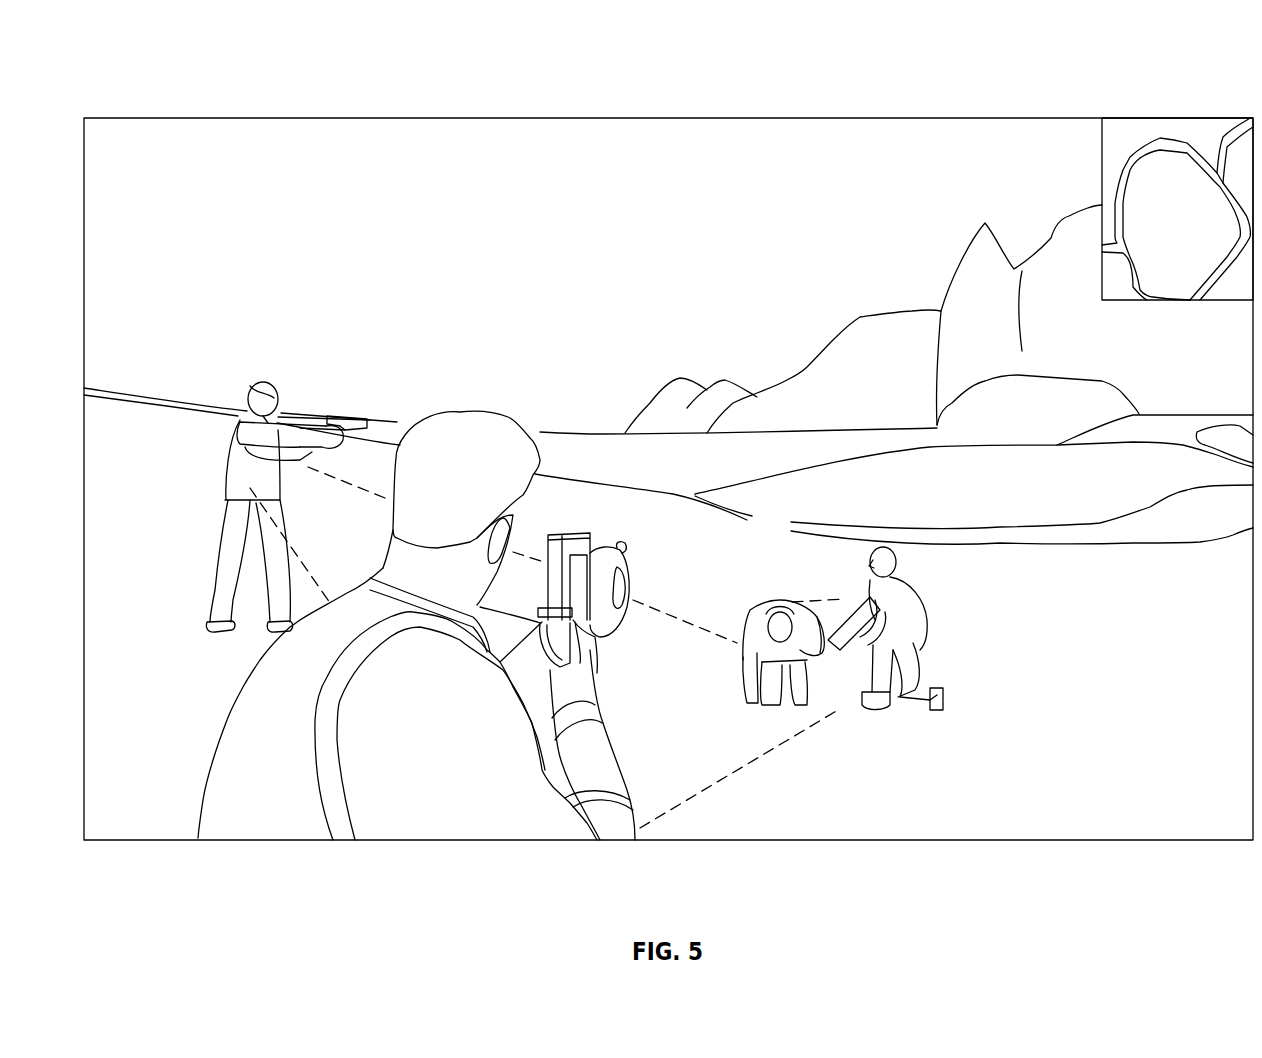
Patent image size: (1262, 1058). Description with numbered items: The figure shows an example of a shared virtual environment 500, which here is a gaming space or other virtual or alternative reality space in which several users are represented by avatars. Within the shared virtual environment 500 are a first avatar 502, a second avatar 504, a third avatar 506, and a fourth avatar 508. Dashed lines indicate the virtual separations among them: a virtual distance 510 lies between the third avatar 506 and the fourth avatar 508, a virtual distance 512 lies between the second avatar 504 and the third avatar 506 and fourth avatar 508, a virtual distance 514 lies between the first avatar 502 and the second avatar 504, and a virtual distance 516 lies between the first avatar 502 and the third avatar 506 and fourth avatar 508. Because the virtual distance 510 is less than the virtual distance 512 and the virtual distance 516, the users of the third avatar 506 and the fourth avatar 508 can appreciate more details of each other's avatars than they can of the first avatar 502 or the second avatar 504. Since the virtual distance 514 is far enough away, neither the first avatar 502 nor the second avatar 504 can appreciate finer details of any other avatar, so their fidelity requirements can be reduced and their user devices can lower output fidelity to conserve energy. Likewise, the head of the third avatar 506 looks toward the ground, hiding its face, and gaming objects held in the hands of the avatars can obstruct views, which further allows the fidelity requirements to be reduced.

The shared virtual environment 500 is at (1150, 107).
The first avatar 502 is at (251, 390).
The second avatar 504 is at (460, 410).
The third avatar 506 is at (777, 603).
The fourth avatar 508 is at (917, 638).
The virtual distance 510 is at (810, 603).
The virtual distance 512 is at (715, 782).
The virtual distance 514 is at (310, 573).
The virtual distance 516 is at (738, 643).